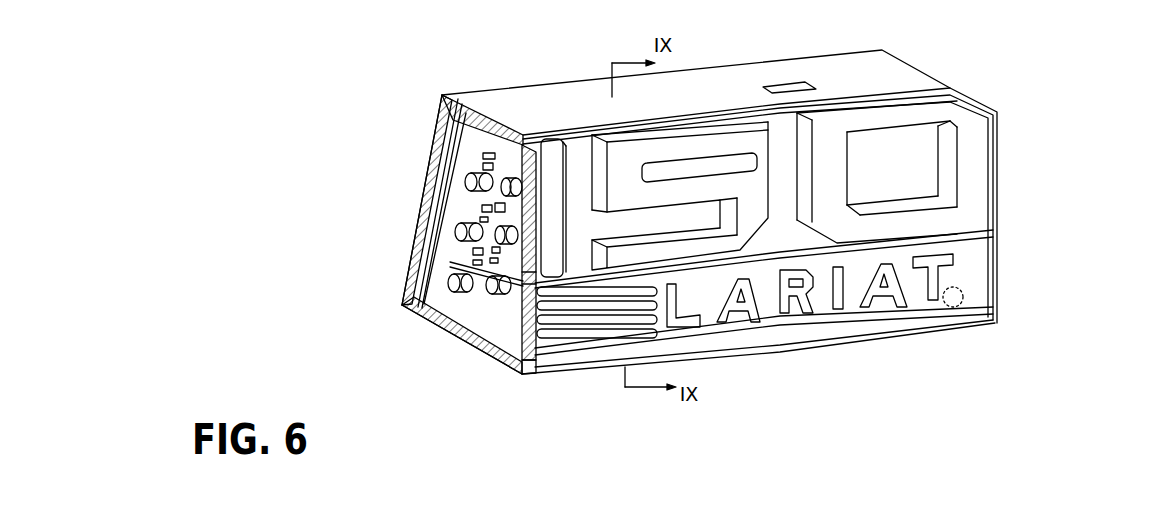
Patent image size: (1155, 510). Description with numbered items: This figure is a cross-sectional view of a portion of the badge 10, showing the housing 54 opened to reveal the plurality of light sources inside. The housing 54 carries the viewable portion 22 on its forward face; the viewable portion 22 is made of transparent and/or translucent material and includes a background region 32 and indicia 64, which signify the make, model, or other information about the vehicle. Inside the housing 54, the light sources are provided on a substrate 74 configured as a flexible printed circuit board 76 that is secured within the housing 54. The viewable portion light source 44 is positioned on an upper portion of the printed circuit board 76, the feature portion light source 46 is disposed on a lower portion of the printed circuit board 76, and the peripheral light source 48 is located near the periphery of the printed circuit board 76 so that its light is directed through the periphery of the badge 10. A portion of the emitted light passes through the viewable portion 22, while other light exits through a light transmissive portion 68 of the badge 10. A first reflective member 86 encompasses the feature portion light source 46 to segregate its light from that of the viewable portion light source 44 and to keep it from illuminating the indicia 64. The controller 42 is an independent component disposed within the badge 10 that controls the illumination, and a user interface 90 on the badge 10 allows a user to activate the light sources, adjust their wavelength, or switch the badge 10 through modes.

The badge 10 is at (1040, 123).
The viewable portion 22 is at (577, 163).
The background region 32 is at (788, 150).
The controller 42 is at (430, 163).
The viewable portion light source 44 is at (466, 182).
The feature portion light source 46 is at (458, 292).
The peripheral light source 48 is at (955, 307).
The housing 54 is at (837, 70).
The indicia 64 is at (622, 152).
The light transmissive portion 68 is at (705, 136).
The substrate 74 is at (449, 205).
The flexible printed circuit board 76 is at (470, 144).
The first reflective member 86 is at (452, 266).
The user interface 90 is at (783, 84).